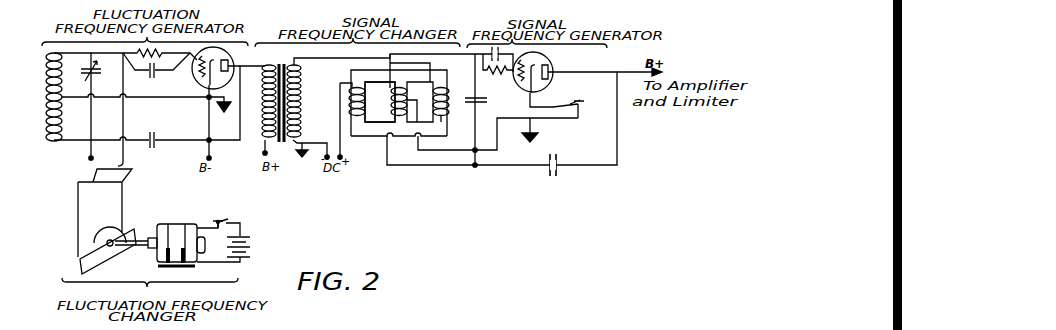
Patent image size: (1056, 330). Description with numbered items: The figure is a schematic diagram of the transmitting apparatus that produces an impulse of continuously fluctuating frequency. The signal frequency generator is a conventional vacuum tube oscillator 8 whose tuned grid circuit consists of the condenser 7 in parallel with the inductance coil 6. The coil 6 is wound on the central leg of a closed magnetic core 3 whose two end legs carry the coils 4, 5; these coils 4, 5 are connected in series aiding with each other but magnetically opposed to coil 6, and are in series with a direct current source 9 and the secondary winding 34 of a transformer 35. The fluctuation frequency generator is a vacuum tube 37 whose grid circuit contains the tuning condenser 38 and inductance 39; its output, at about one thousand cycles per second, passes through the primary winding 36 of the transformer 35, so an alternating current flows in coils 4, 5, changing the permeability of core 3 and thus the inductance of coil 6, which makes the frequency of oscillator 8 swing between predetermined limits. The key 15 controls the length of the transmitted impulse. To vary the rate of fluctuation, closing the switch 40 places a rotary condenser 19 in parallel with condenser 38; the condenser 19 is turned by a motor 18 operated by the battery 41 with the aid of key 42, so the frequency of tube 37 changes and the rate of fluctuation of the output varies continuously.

The closed magnetic core 3 is at (363, 132).
The coil 4 is at (349, 107).
The coil 5 is at (441, 128).
The inductance coil 6 is at (403, 128).
The condenser 7 is at (480, 92).
The vacuum tube oscillator 8 is at (549, 56).
The direct current source 9 is at (332, 150).
The key 15 is at (570, 102).
The motor 18 is at (176, 225).
The rotary condenser 19 is at (82, 263).
The secondary winding 34 is at (296, 91).
The transformer 35 is at (282, 140).
The primary winding 36 is at (263, 122).
The vacuum tube 37 is at (228, 50).
The tuning condenser 38 is at (88, 82).
The inductance 39 is at (45, 122).
The switch 40 is at (95, 175).
The battery 41 is at (252, 242).
The key 42 is at (226, 220).